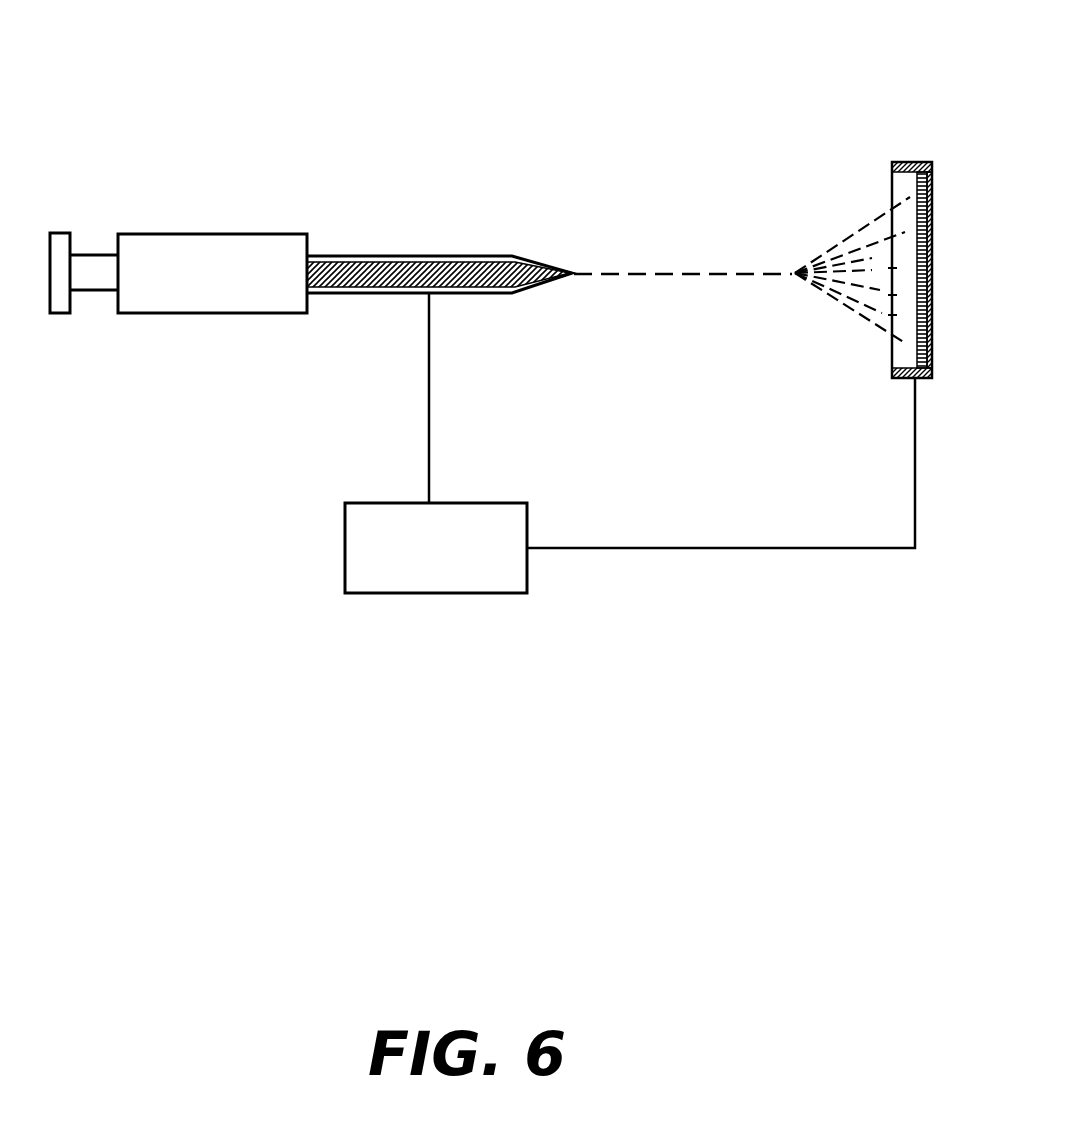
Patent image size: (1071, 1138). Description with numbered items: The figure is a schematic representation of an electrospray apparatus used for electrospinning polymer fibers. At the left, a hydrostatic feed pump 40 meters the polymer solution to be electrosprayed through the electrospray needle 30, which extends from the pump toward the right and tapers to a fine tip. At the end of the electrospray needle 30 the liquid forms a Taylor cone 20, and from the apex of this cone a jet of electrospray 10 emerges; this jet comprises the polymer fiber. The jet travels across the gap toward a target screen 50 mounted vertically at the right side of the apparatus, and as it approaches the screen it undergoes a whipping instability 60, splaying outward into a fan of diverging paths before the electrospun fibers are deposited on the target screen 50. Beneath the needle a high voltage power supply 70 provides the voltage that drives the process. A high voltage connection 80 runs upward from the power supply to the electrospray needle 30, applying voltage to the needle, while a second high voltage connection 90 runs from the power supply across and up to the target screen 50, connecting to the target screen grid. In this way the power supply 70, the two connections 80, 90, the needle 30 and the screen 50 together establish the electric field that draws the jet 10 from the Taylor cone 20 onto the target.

The jet of electrospray 10 is at (677, 276).
The Taylor cone 20 is at (575, 272).
The electrospray needle 30 is at (465, 256).
The hydrostatic feed pump 40 is at (208, 253).
The target screen 50 is at (907, 162).
The whipping instability 60 is at (847, 308).
The high voltage power supply 70 is at (345, 538).
The high voltage connection to the electrospray needle 80 is at (429, 365).
The high voltage connection to the target screen grid 90 is at (750, 548).